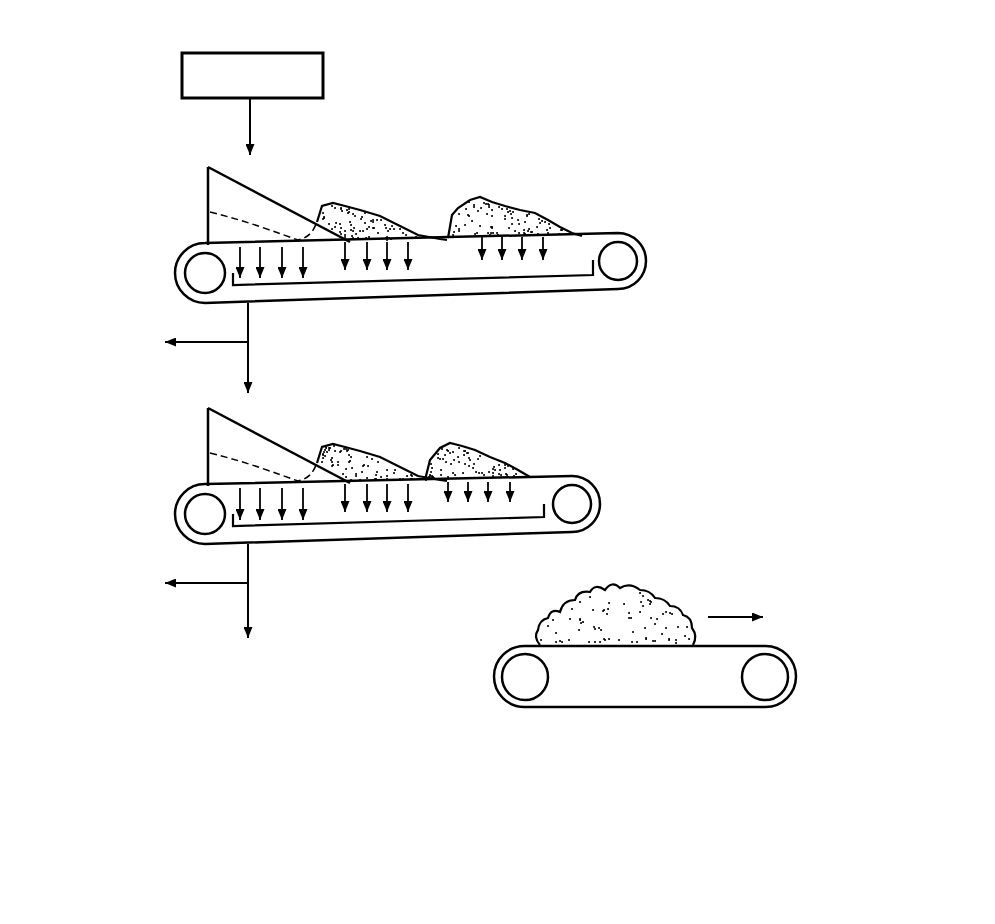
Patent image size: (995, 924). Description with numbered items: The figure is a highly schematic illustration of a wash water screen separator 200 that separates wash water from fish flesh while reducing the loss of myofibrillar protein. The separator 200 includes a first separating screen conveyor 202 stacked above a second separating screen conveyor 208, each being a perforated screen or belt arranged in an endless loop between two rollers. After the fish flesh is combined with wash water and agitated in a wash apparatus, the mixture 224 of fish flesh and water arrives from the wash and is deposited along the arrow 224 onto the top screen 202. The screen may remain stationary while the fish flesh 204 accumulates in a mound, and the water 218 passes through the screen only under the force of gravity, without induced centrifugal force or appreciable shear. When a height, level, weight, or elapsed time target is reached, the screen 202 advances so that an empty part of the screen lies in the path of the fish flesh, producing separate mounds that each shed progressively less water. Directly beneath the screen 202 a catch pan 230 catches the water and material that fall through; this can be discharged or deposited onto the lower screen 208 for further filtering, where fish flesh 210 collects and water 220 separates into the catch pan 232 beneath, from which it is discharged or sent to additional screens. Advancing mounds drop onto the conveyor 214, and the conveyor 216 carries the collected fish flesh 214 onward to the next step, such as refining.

The separator 200 is at (556, 64).
The first separating screen conveyor 202 is at (434, 238).
The fish flesh 204 is at (332, 206).
The second separating screen conveyor 208 is at (412, 483).
The fish flesh 210 is at (333, 450).
The conveyor 214 is at (680, 607).
The conveyor 216 is at (645, 664).
The water 218 is at (303, 265).
The water 220 is at (297, 506).
The mixture of fish flesh and water 224 is at (249, 118).
The catch pan 230 is at (470, 276).
The catch pan 232 is at (470, 518).